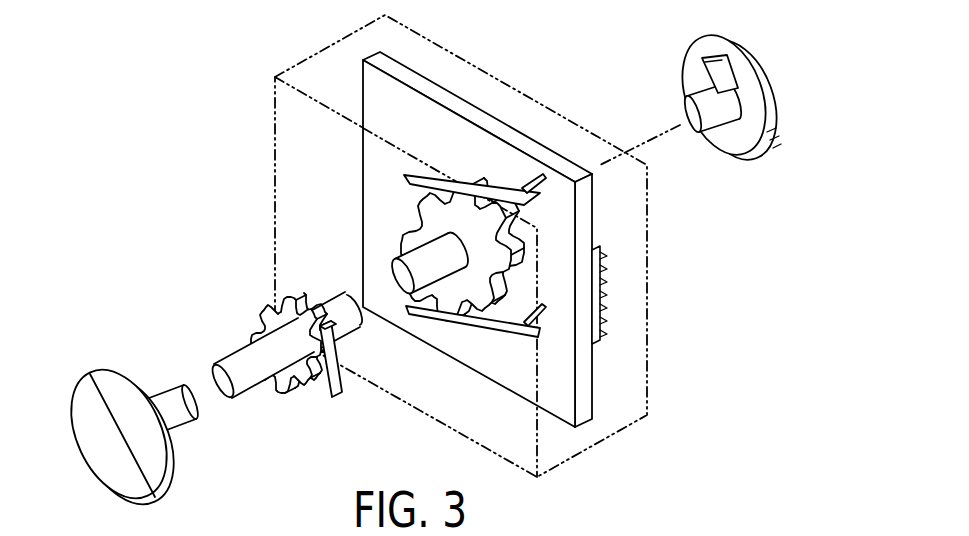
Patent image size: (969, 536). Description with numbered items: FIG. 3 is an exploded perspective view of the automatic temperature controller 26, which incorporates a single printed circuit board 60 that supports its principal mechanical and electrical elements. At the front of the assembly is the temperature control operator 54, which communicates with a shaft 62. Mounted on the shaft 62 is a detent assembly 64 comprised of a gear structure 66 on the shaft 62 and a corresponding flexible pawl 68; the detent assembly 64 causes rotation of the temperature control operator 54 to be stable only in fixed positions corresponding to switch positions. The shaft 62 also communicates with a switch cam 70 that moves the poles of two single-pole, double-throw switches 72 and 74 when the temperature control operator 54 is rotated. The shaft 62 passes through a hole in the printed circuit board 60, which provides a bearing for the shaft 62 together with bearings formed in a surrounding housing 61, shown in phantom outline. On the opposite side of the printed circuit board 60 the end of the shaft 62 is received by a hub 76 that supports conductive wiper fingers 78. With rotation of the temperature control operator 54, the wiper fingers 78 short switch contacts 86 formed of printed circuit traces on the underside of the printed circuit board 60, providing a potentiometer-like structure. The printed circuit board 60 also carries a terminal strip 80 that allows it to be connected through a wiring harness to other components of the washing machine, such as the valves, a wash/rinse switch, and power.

The automatic temperature controller 26 is at (320, 27).
The temperature control operator 54 is at (167, 455).
The printed circuit board 60 is at (592, 390).
The housing 61 is at (273, 74).
The shaft 62 is at (237, 352).
The detent assembly 64 is at (238, 278).
The gear structure 66 is at (302, 370).
The flexible pawl 68 is at (340, 380).
The switch cam 70 is at (423, 220).
The single-pole, double-throw switch 72 is at (498, 190).
The single-pole, double-throw switch 74 is at (507, 330).
The hub 76 is at (775, 104).
The wiper fingers 78 is at (722, 70).
The terminal strip 80 is at (602, 307).
The switch contacts 86 is at (828, 143).